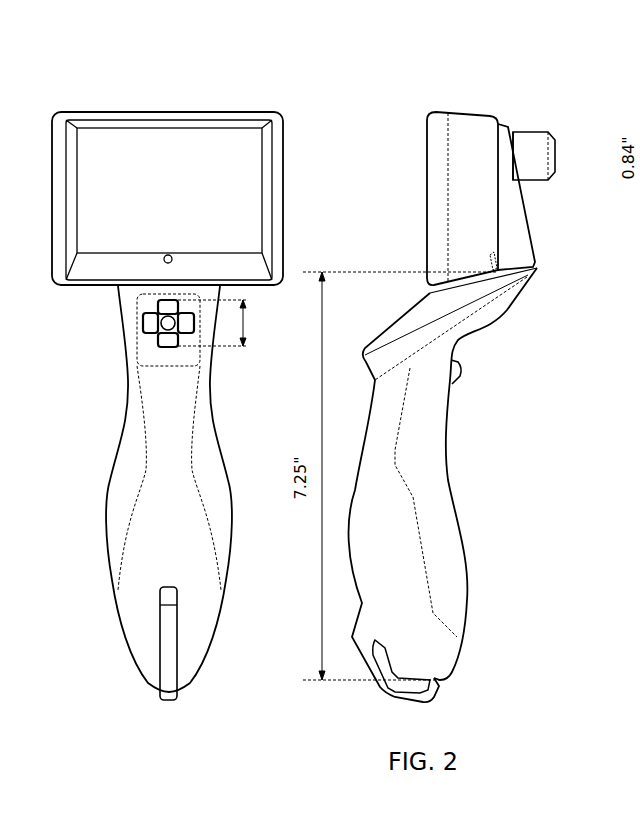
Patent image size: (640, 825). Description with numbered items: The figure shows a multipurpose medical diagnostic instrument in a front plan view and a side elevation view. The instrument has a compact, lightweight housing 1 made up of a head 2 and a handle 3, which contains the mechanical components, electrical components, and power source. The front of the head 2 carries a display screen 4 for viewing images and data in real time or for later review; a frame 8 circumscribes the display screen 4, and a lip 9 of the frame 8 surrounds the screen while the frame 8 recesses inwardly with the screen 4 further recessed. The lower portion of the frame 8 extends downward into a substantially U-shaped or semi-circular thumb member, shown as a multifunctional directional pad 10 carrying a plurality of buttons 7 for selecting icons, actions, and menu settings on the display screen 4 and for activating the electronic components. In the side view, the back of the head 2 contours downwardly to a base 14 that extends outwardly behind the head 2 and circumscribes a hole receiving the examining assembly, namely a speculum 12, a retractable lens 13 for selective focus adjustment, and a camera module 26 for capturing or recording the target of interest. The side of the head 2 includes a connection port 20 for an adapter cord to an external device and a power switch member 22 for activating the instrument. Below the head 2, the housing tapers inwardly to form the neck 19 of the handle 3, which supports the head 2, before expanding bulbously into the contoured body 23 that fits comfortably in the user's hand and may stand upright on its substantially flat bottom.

In FIG. 1, the housing 1 is at (55, 60).
In FIG. 1, the head 2 is at (277, 87).
In FIG. 1, the handle 3 is at (96, 643).
In FIG. 1, the display screen 4 is at (130, 148).
In FIG. 1, the buttons 7 is at (148, 335).
In FIG. 1, the frame 8 is at (268, 157).
In FIG. 2, the lip 9 is at (440, 112).
In FIG. 1, the multifunctional directional pad 10 is at (126, 343).
In FIG. 2, the speculum 12 is at (532, 127).
In FIG. 2, the retractable lens 13 is at (574, 117).
In FIG. 2, the base 14 is at (537, 230).
In FIG. 2, the neck 19 is at (508, 308).
In FIG. 2, the connection port 20 is at (495, 272).
In FIG. 2, the power switch member 22 is at (462, 370).
In FIG. 1, the body 23 is at (200, 598).
In FIG. 2, the camera module 26 is at (570, 117).